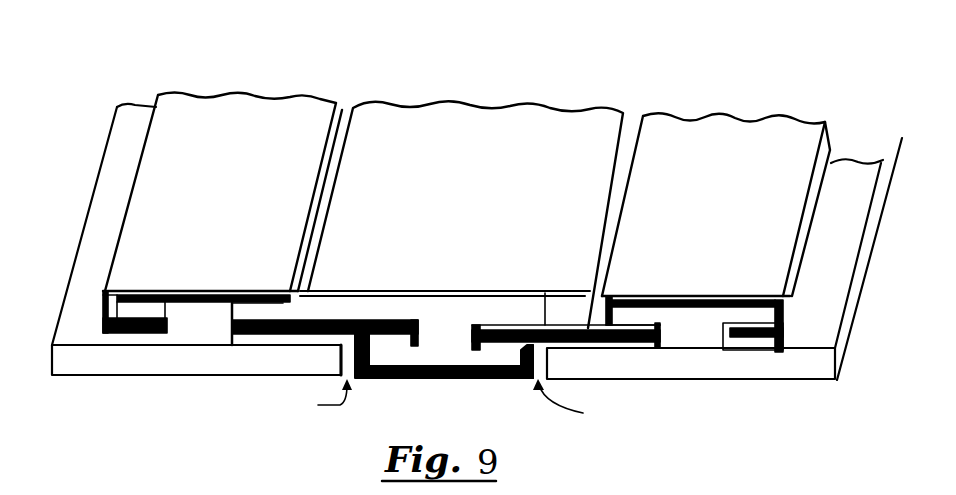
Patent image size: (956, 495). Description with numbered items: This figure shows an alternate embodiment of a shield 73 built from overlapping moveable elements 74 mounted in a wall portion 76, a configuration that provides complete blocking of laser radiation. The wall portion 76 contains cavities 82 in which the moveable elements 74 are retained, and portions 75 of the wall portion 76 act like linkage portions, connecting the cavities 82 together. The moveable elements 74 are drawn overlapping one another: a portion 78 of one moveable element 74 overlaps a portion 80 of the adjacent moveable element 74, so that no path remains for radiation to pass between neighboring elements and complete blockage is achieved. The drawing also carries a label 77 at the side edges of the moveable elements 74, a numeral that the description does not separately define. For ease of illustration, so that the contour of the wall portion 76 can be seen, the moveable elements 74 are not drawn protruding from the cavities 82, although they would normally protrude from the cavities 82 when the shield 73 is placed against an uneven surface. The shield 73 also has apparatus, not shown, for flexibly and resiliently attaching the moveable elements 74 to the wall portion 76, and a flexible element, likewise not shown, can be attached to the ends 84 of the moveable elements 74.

The shield 73 is at (213, 81).
The moveable elements 74 is at (423, 290).
The portions of the wall portion 75 is at (506, 333).
The wall portion 76 is at (710, 300).
The die edge 77 is at (289, 322).
The portion of one element 78 is at (577, 292).
The portion of an adjacent moveable element 80 is at (557, 382).
The cavities 82 is at (778, 322).
The ends of the moveable elements 84 is at (703, 365).